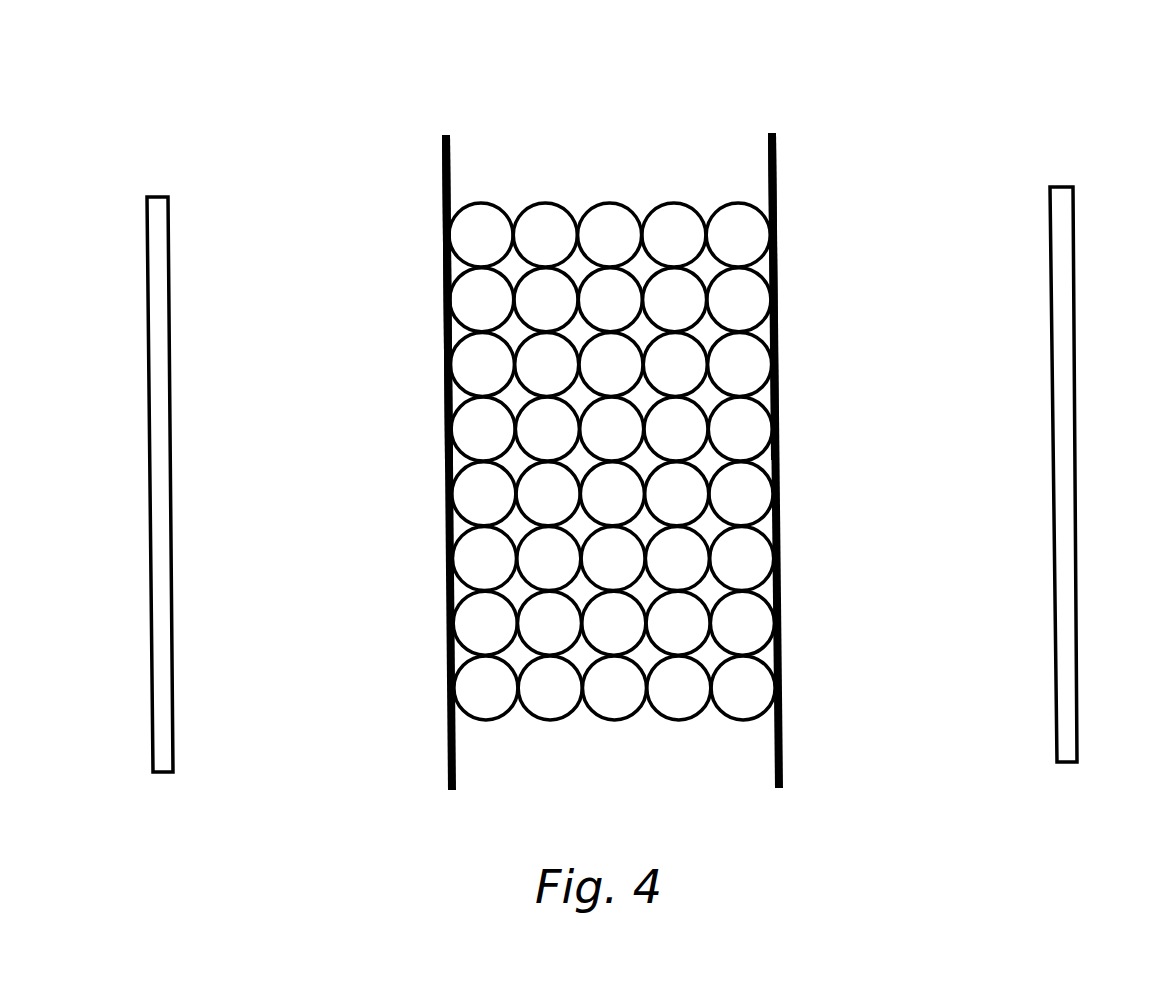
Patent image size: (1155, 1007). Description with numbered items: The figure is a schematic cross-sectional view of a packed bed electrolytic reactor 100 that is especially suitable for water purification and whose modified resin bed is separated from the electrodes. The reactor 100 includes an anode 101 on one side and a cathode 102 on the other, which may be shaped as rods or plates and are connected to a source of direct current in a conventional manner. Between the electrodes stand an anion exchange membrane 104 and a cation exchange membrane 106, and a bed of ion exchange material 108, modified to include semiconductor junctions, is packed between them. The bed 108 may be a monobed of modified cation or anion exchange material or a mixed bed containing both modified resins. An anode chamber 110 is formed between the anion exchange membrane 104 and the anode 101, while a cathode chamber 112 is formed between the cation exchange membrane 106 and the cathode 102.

The electrolytic reactor 100 is at (270, 97).
The anode 101 is at (182, 740).
The cathode 102 is at (1086, 731).
The anion exchange membrane 104 is at (432, 274).
The cation exchange membrane 106 is at (792, 272).
The bed of ion exchange material 108 is at (620, 712).
The anode chamber 110 is at (328, 458).
The cathode chamber 112 is at (934, 456).